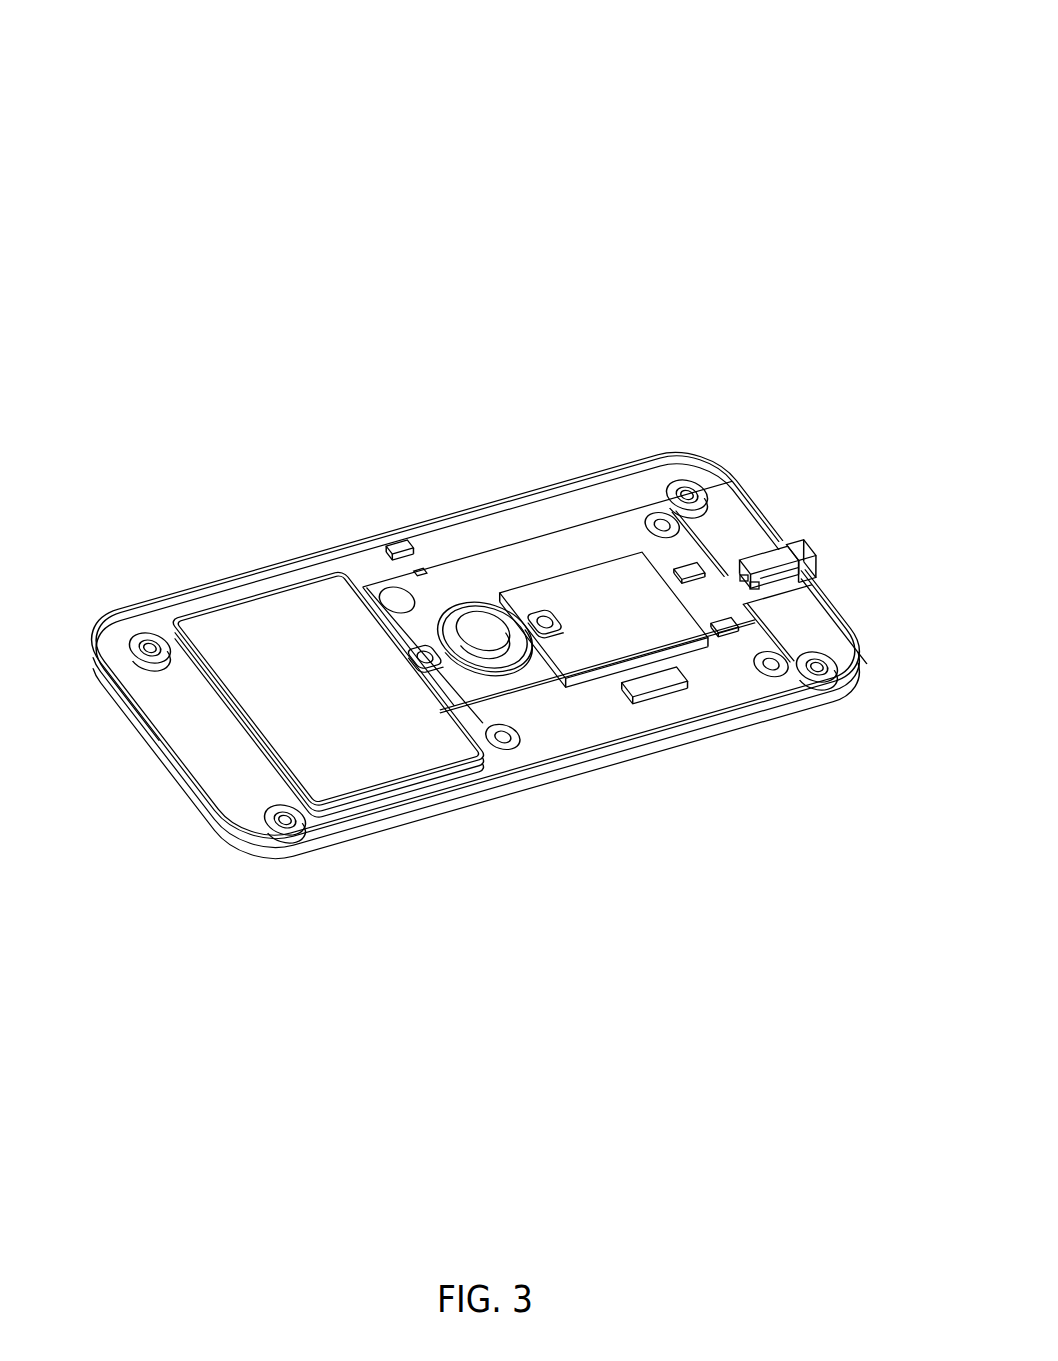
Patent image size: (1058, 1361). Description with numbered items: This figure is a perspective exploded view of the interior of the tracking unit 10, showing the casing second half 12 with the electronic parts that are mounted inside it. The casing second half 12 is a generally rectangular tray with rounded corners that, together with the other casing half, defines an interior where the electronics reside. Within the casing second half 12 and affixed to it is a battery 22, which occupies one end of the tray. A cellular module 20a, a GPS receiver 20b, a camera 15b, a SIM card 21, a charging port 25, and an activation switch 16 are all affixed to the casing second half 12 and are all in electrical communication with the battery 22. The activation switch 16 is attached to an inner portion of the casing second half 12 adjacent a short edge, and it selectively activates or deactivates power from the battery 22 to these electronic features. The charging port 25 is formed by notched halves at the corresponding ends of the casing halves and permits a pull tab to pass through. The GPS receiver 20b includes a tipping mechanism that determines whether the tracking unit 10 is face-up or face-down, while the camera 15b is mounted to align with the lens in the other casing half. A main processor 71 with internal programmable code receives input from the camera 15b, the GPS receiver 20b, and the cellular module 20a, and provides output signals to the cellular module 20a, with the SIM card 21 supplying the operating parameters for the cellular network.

The tracking unit 10 is at (125, 179).
The casing second half 12 is at (195, 806).
The camera 15b is at (484, 628).
The activation switch 16 is at (752, 565).
The cellular module 20a is at (663, 683).
The GPS receiver 20b is at (692, 563).
The SIM card 21 is at (736, 621).
The battery 22 is at (265, 640).
The charging port 25 is at (805, 557).
The main processor 71 is at (623, 600).